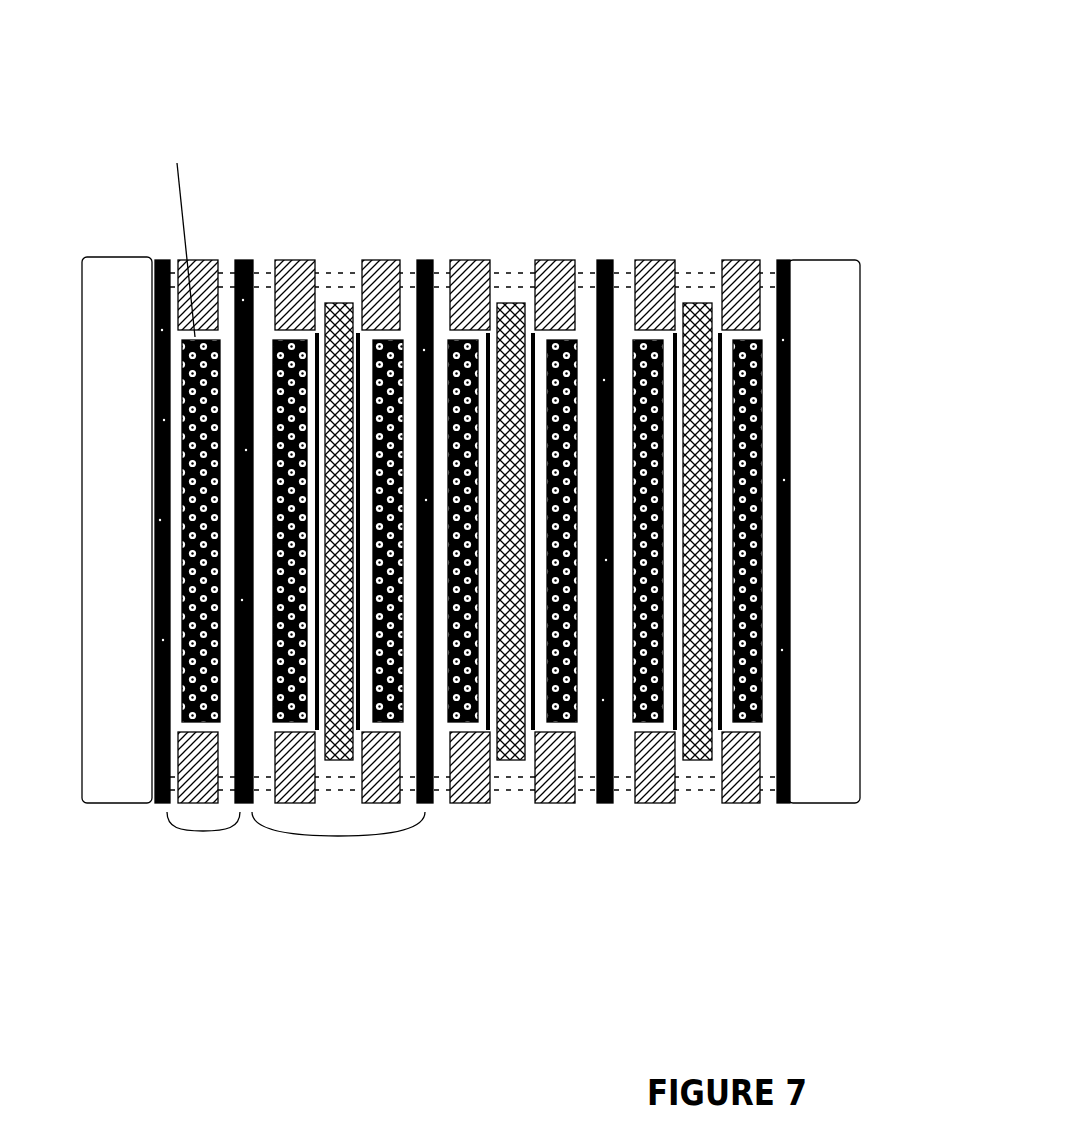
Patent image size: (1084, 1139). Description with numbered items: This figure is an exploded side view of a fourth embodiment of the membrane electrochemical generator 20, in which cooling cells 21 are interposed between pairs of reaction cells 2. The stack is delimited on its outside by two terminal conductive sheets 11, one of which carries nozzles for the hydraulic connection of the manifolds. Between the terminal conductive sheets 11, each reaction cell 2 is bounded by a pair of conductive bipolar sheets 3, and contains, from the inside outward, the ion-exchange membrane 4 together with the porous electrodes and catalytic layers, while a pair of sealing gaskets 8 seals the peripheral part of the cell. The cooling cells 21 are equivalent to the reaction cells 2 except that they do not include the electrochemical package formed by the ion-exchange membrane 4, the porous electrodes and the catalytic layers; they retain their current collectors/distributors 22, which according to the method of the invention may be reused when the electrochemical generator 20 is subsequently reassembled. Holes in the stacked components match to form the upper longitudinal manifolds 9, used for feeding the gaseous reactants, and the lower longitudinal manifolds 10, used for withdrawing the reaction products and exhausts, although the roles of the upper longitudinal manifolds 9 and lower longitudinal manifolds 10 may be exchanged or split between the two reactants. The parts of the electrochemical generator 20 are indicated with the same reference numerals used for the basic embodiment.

The reaction cell 2 is at (338, 855).
The conductive bipolar sheet 3 is at (163, 260).
The ion-exchange membrane 4 is at (338, 303).
The sealing gasket 8 is at (203, 260).
The upper longitudinal manifold 9 is at (442, 282).
The lower longitudinal manifold 10 is at (443, 778).
The terminal conductive sheet 11 is at (107, 363).
The electrochemical generator 20 is at (543, 92).
The cooling cell 21 is at (203, 846).
The current collector/distributor of the cooling cell 22 is at (760, 407).